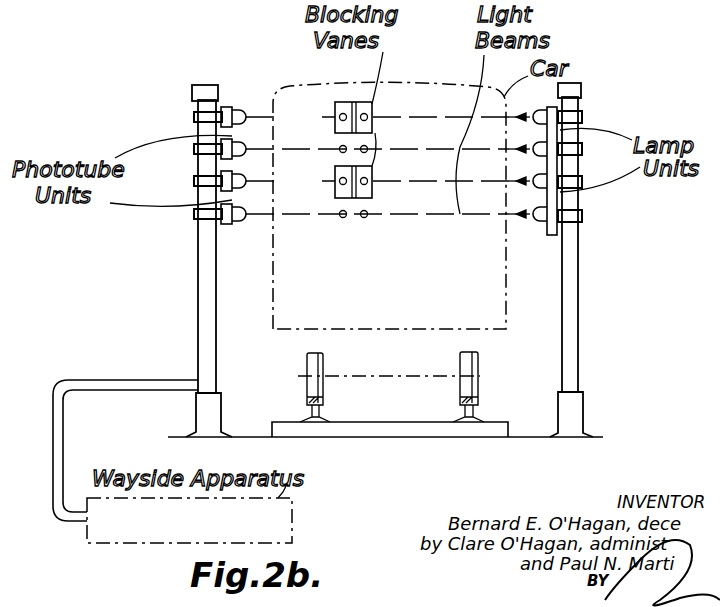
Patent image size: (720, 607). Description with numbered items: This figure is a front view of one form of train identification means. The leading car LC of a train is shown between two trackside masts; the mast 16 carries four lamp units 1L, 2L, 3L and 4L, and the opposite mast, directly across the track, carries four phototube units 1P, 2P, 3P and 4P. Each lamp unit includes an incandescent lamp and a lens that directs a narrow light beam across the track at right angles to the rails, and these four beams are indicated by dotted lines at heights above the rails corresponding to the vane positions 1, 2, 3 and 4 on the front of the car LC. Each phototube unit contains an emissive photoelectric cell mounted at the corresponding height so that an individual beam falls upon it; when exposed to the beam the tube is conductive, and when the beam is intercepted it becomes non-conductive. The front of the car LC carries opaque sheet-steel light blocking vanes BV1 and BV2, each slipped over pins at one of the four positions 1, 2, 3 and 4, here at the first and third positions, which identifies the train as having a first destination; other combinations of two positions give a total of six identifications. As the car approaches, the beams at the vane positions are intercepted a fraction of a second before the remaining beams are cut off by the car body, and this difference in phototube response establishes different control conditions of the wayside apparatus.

The phototube unit 1P is at (222, 116).
The phototube unit 2P is at (222, 148).
The phototube unit 3P is at (222, 180).
The phototube unit 4P is at (222, 213).
The lamp unit 1L is at (558, 114).
The lamp unit 2L is at (558, 150).
The lamp unit 3L is at (558, 182).
The lamp unit 4L is at (558, 214).
The vane mounting position 1 is at (379, 118).
The vane mounting position 2 is at (379, 150).
The vane mounting position 3 is at (379, 182).
The vane mounting position 4 is at (379, 215).
The light blocking vane BV1 is at (327, 116).
The light blocking vane BV2 is at (327, 181).
The mast 16 is at (198, 292).
The leading car LC is at (506, 316).